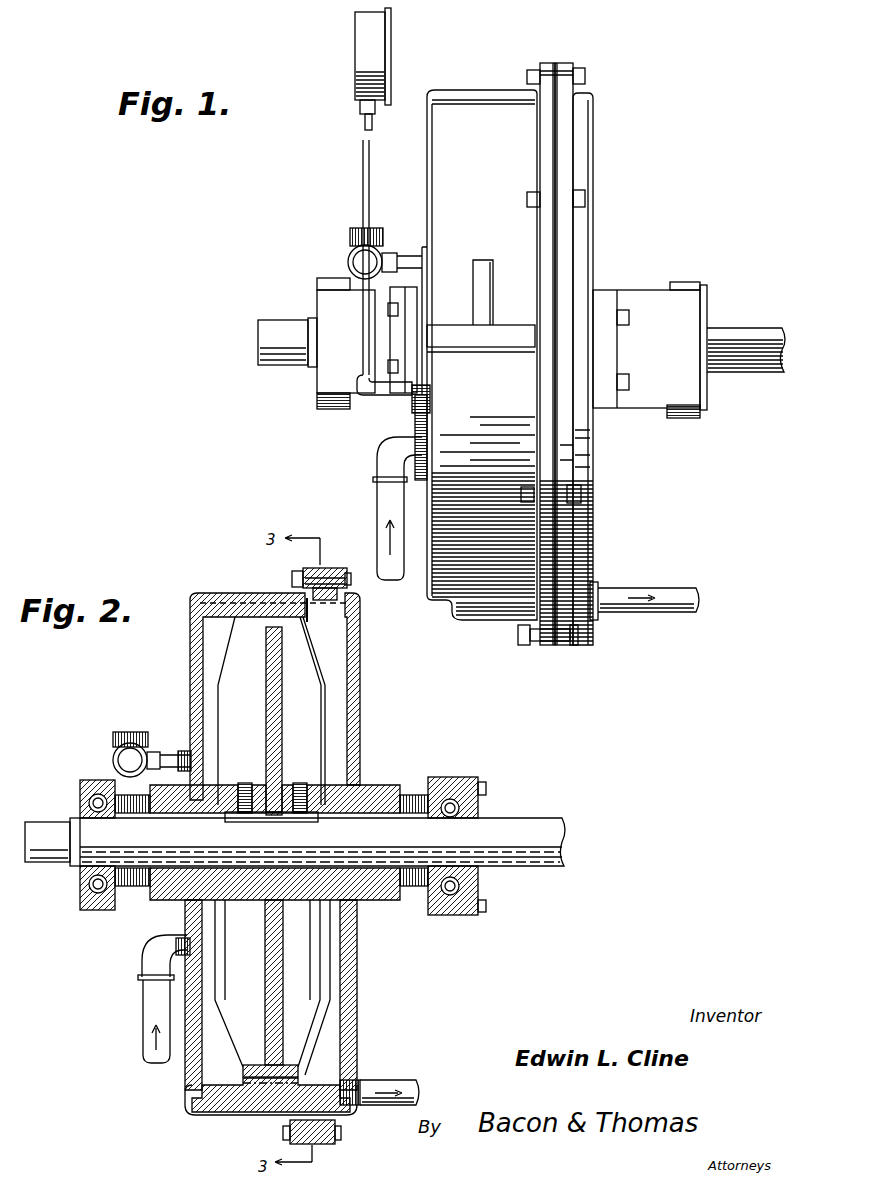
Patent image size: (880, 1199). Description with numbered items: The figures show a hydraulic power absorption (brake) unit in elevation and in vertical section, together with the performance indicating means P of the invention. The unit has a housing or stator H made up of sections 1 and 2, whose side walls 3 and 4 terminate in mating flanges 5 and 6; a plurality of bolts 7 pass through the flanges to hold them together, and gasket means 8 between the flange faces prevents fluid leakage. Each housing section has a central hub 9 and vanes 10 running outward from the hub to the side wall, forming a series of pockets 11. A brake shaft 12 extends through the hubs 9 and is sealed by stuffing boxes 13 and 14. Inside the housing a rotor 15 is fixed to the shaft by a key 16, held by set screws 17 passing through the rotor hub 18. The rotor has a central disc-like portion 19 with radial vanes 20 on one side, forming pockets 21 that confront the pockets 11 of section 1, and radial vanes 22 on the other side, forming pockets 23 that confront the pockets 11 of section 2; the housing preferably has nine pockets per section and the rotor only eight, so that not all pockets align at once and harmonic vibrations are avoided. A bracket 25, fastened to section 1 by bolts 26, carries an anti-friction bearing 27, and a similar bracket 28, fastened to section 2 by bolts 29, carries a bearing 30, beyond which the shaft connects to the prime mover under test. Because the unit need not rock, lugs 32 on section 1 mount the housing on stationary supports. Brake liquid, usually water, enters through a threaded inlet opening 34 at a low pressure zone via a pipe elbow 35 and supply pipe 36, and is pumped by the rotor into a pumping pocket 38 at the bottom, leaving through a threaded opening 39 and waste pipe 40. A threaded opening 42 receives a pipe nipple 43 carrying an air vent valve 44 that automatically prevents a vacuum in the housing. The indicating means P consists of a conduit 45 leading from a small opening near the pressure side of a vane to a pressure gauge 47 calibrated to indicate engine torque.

In FIG. 1, the housing section 1 is at (474, 84).
In FIG. 2, the housing section 1 is at (190, 664).
In FIG. 1, the housing section 2 is at (594, 246).
In FIG. 2, the housing section 2 is at (360, 642).
In FIG. 2, the side wall 3 is at (232, 597).
In FIG. 2, the side wall 4 is at (350, 610).
In FIG. 1, the mating flange 5 is at (548, 68).
In FIG. 2, the mating flange 5 is at (312, 570).
In FIG. 1, the mating flange 6 is at (570, 66).
In FIG. 2, the mating flange 6 is at (330, 572).
In FIG. 1, the bolts 7 is at (586, 76).
In FIG. 2, the bolts 7 is at (290, 580).
In FIG. 1, the gasket means 8 is at (552, 456).
In FIG. 2, the gasket means 8 is at (316, 1146).
In FIG. 2, the central hub 9 is at (352, 766).
In FIG. 2, the vanes 10 is at (206, 696).
In FIG. 2, the pockets 11 is at (340, 706).
In FIG. 1, the brake shaft 12 is at (752, 330).
In FIG. 2, the brake shaft 12 is at (548, 822).
In FIG. 2, the stuffing box 13 is at (148, 885).
In FIG. 2, the stuffing box 14 is at (390, 905).
In FIG. 2, the rotor 15 is at (324, 1035).
In FIG. 2, the key 16 is at (290, 822).
In FIG. 2, the set screws 17 is at (245, 783).
In FIG. 2, the hub 18 is at (245, 905).
In FIG. 2, the central disc-like portion 19 is at (283, 975).
In FIG. 2, the radial vanes 20 is at (230, 1022).
In FIG. 2, the pockets 21 is at (265, 995).
In FIG. 2, the radial vanes 22 is at (318, 943).
In FIG. 2, the pockets 23 is at (283, 714).
In FIG. 1, the bracket 25 is at (316, 390).
In FIG. 2, the bracket 25 is at (80, 906).
In FIG. 1, the bolts 26 is at (390, 338).
In FIG. 2, the anti-friction bearing 27 is at (80, 798).
In FIG. 1, the bracket 28 is at (646, 292).
In FIG. 2, the bracket 28 is at (416, 790).
In FIG. 1, the bolts 29 is at (630, 318).
In FIG. 2, the anti-friction bearing 30 is at (478, 886).
In FIG. 1, the lugs 32 is at (506, 325).
In FIG. 2, the threaded inlet opening 34 is at (196, 944).
In FIG. 1, the pipe elbow 35 is at (392, 437).
In FIG. 2, the pipe elbow 35 is at (145, 960).
In FIG. 1, the supply or inlet pipe 36 is at (377, 496).
In FIG. 2, the supply or inlet pipe 36 is at (142, 1008).
In FIG. 2, the pumping pocket 38 is at (275, 1112).
In FIG. 2, the threaded opening 39 is at (362, 1083).
In FIG. 1, the waste pipe 40 is at (686, 587).
In FIG. 2, the waste pipe 40 is at (418, 1083).
In FIG. 2, the threaded opening 42 is at (190, 755).
In FIG. 1, the pipe nipple 43 is at (404, 258).
In FIG. 2, the pipe nipple 43 is at (168, 754).
In FIG. 1, the air vent valve 44 is at (350, 234).
In FIG. 2, the air vent valve 44 is at (113, 736).
In FIG. 1, the conduit 45 is at (362, 172).
In FIG. 1, the pressure actuatable gauge 47 is at (356, 55).
In FIG. 1, the housing or stator H is at (602, 143).
In FIG. 2, the housing or stator H is at (368, 681).
In FIG. 1, the performance indicating means P is at (397, 54).